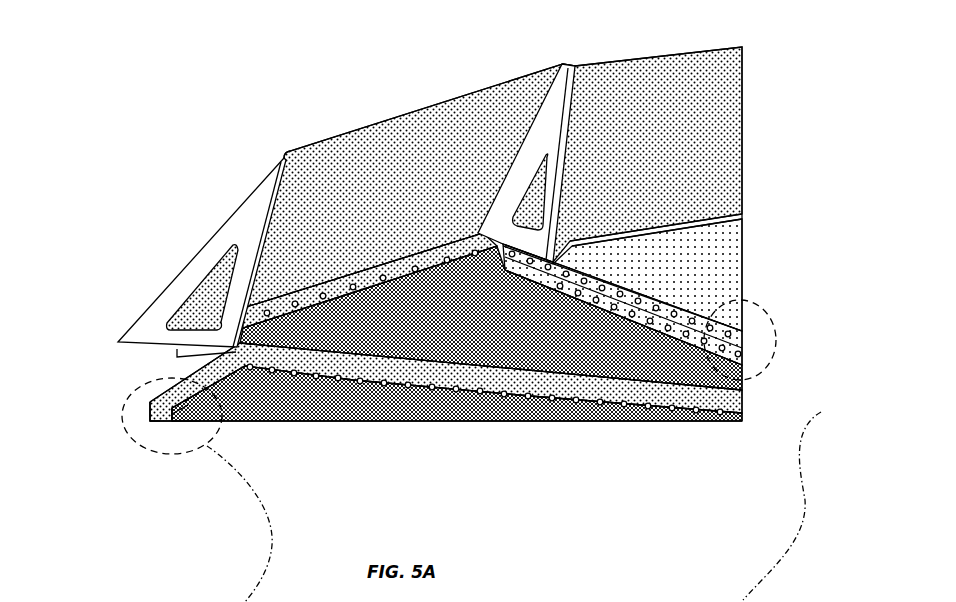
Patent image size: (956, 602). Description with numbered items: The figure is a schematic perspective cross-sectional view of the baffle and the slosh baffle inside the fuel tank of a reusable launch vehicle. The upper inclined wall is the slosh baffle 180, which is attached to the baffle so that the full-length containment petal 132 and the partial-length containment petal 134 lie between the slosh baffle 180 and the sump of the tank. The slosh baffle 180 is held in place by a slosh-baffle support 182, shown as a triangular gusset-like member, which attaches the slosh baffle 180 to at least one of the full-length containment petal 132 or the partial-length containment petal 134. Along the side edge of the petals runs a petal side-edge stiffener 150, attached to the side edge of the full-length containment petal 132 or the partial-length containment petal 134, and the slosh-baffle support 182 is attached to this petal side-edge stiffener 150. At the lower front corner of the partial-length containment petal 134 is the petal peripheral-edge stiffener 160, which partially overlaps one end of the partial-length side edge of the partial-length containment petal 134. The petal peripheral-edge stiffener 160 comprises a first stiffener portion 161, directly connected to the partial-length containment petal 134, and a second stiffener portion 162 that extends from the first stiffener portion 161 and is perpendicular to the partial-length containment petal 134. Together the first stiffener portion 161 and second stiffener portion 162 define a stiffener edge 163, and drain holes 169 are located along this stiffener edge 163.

The full-length containment petal 132 is at (717, 238).
The partial-length containment petal 134 is at (527, 424).
The petal side-edge stiffener 150 is at (750, 352).
The petal peripheral-edge stiffener 160 is at (432, 215).
The first stiffener portion 161 is at (170, 415).
The second stiffener portion 162 is at (148, 412).
The stiffener edge 163 is at (196, 417).
The drain holes 169 is at (181, 416).
The slosh baffle 180 is at (377, 152).
The slosh-baffle support 182 is at (248, 214).